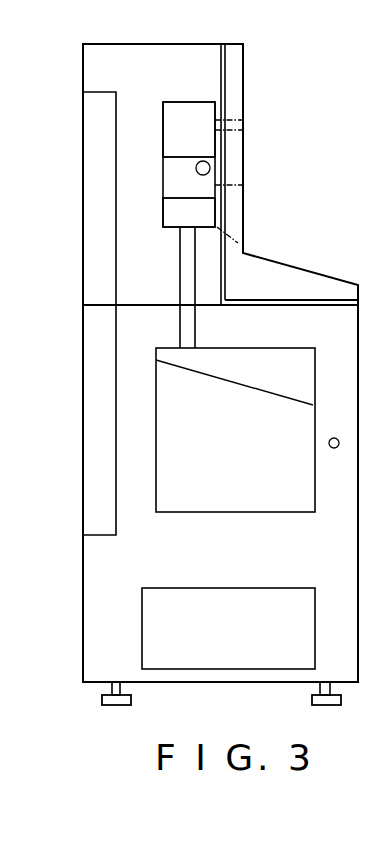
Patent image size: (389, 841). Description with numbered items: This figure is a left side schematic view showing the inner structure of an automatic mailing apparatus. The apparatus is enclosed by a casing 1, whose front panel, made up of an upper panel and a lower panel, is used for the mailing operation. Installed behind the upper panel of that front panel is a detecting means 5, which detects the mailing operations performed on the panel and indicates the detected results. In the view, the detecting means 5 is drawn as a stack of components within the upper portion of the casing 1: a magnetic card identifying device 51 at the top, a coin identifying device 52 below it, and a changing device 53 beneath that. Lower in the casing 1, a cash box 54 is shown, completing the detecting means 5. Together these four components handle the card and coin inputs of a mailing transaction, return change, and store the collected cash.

The casing 1 is at (303, 267).
The detecting means 5 is at (155, 135).
The magnetic card identifying device 51 is at (176, 110).
The coin identifying device 52 is at (170, 185).
The changing device 53 is at (170, 218).
The cash box 54 is at (162, 392).